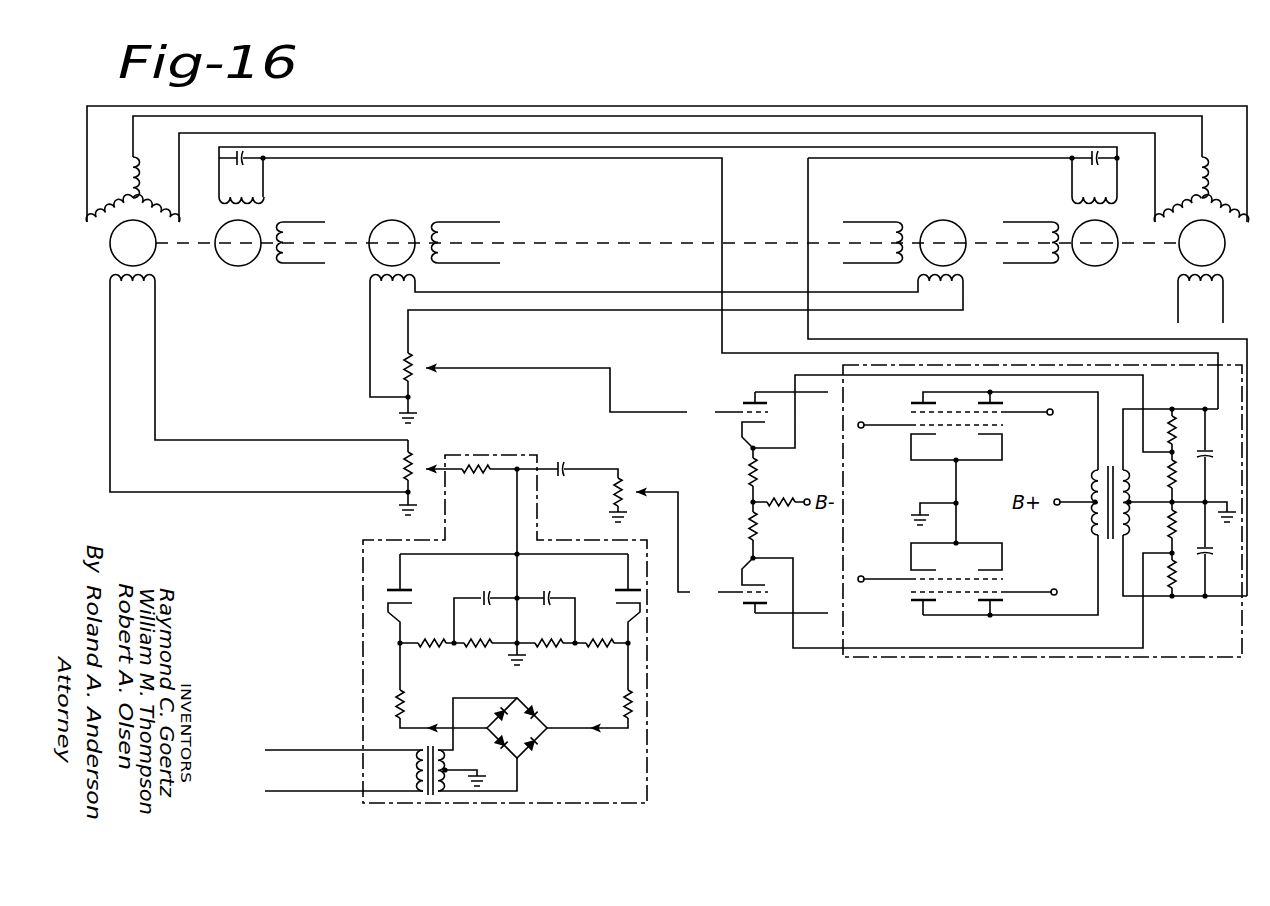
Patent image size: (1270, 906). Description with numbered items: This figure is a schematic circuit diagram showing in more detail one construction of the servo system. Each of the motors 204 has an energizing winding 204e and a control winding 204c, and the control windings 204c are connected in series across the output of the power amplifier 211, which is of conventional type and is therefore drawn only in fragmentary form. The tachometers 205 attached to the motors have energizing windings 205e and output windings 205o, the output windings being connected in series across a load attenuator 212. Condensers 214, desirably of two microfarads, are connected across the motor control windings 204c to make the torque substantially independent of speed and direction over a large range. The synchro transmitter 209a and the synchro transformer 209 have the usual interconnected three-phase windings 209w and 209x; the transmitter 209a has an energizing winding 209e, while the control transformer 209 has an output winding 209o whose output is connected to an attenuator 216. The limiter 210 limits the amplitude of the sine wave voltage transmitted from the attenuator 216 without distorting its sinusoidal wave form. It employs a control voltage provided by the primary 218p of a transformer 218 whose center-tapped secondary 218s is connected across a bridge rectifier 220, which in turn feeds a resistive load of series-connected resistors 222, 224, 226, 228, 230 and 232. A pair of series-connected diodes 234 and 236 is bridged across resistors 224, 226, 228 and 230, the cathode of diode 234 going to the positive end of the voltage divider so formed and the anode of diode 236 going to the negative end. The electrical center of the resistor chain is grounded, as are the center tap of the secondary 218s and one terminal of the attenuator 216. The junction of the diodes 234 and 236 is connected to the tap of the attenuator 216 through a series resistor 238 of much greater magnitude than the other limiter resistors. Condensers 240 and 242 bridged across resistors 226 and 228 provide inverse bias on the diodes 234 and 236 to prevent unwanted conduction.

The motor 204 is at (258, 230).
The control winding 204c is at (272, 195).
The energizing winding 204e is at (322, 266).
The tachometer 205 is at (414, 258).
The energizing winding 205e is at (440, 221).
The output winding 205o is at (366, 292).
The synchro transformer 209 is at (155, 259).
The synchro transmitter 209a is at (1181, 262).
The three-phase windings 209x is at (148, 203).
The three-phase windings 209w is at (1200, 197).
The output winding 209o is at (158, 290).
The energizing winding 209e is at (1176, 286).
The limiter 210 is at (650, 727).
The power amplifier 211 is at (952, 661).
The load attenuator 212 is at (418, 368).
The condenser 214 is at (665, 169).
The attenuator 216 is at (418, 455).
The transformer 218 is at (391, 746).
The primary 218p is at (420, 775).
The secondary 218s is at (446, 769).
The bridge rectifier 220 is at (532, 712).
The resistor 222 is at (404, 706).
The resistor 224 is at (430, 648).
The resistor 226 is at (497, 629).
The resistor 228 is at (545, 648).
The resistor 230 is at (605, 650).
The resistor 232 is at (634, 696).
The diode 234 is at (410, 599).
The diode 236 is at (616, 606).
The series resistor 238 is at (478, 463).
The condenser 240 is at (484, 590).
The condenser 242 is at (545, 590).